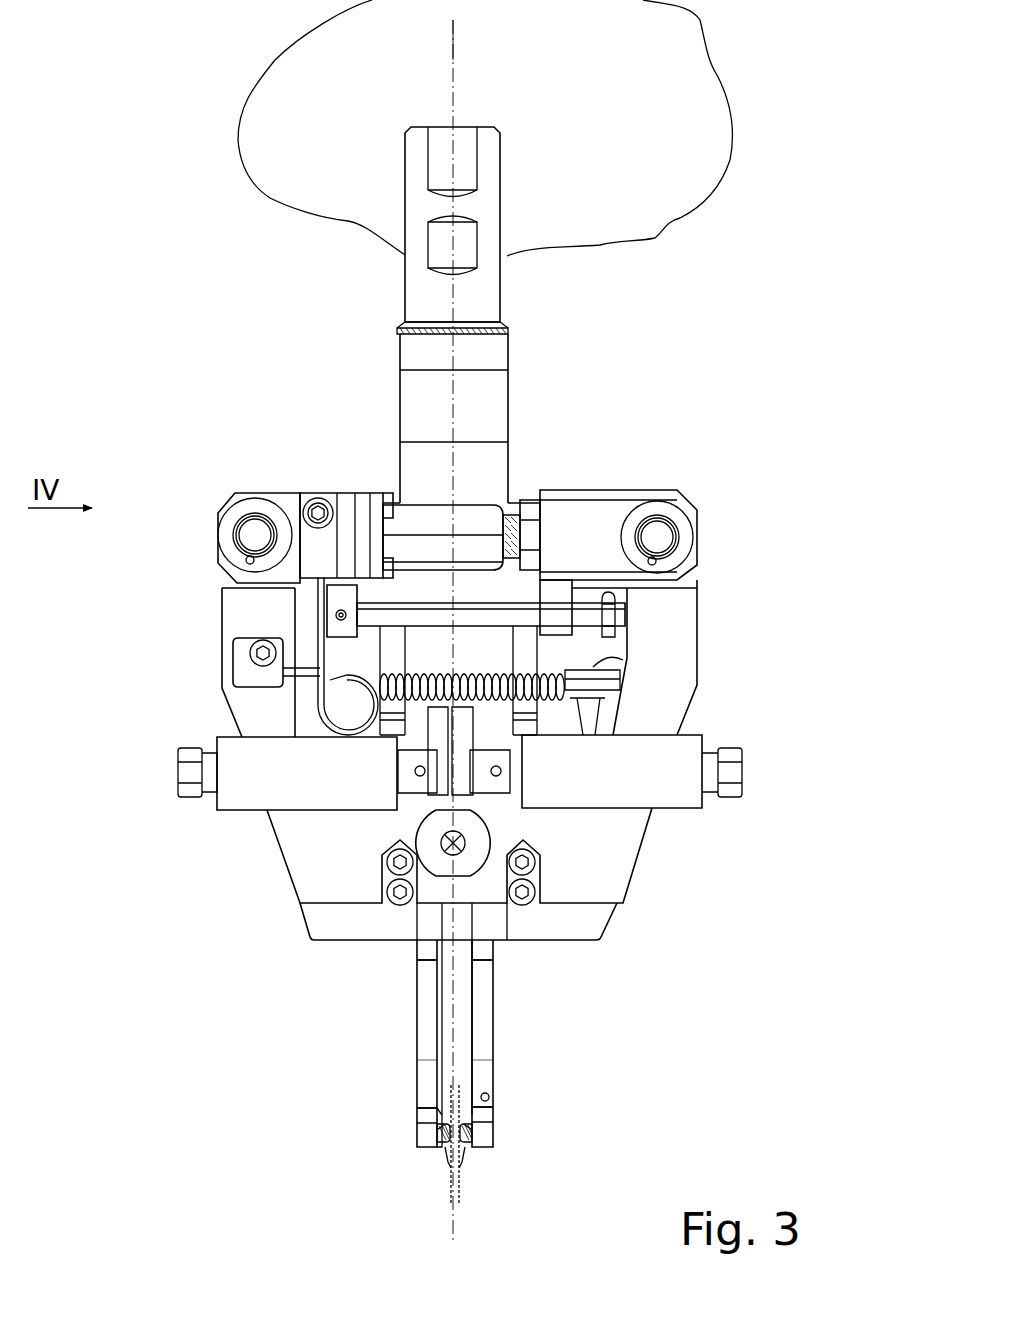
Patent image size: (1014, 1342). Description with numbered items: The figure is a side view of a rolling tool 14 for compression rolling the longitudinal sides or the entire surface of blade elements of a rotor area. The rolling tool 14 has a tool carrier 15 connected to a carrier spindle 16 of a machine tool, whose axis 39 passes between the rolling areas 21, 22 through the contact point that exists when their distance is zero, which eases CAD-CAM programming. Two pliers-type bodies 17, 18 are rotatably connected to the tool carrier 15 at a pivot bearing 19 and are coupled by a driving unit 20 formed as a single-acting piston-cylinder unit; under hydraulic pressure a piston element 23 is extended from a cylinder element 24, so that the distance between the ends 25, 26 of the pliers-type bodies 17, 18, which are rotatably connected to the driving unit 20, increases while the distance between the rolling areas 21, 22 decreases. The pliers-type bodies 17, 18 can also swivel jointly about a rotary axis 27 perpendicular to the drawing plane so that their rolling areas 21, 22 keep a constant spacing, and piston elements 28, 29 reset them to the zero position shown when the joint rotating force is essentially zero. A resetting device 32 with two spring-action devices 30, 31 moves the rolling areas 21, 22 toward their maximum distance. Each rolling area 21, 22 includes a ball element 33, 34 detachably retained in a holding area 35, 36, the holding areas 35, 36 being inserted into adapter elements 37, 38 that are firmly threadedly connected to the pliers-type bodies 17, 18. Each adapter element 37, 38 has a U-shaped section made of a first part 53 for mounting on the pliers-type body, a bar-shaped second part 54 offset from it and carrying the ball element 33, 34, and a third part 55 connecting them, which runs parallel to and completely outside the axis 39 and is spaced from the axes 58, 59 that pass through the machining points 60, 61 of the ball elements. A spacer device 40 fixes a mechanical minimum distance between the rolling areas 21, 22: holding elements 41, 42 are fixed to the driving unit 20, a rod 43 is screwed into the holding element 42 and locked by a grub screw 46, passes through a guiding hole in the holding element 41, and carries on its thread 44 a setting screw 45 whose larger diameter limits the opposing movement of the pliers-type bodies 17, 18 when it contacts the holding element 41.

The rolling tool 14 is at (208, 147).
The tool carrier 15 is at (480, 188).
The carrier spindle 16 is at (285, 63).
The pliers-type body 17 is at (683, 652).
The pliers-type body 18 is at (240, 648).
The pivot bearing 19 is at (428, 822).
The driving unit 20 is at (578, 488).
The rolling area 21 is at (423, 1167).
The rolling area 22 is at (497, 1165).
The piston element 23 is at (475, 512).
The cylinder element 24 is at (345, 560).
The end of pliers-type body 25 is at (700, 493).
The end of pliers-type body 26 is at (216, 488).
The rotary axis 27 is at (493, 843).
The piston element 28 is at (690, 742).
The piston element 29 is at (230, 745).
The spring-action device 30 is at (320, 622).
The spring-action device 31 is at (648, 668).
The resetting device 32 is at (327, 615).
The ball element 33 is at (445, 1152).
The ball element 34 is at (465, 1155).
The holding area 35 is at (418, 1145).
The holding area 36 is at (492, 1145).
The adapter element 37 is at (410, 1012).
The adapter element 38 is at (500, 1020).
The axis 39 is at (456, 42).
The spacer device 40 is at (650, 565).
The holding element 41 is at (556, 595).
The holding element 42 is at (262, 558).
The rod 43 is at (338, 590).
The thread 44 is at (630, 594).
The setting screw 45 is at (627, 588).
The grub screw 46 is at (348, 676).
The first part 53 is at (428, 956).
The second part 54 is at (428, 1115).
The third part 55 is at (420, 1060).
The axis 58 is at (455, 1190).
The axis 59 is at (455, 1190).
The machining point 60 is at (435, 1130).
The machining point 61 is at (492, 1135).